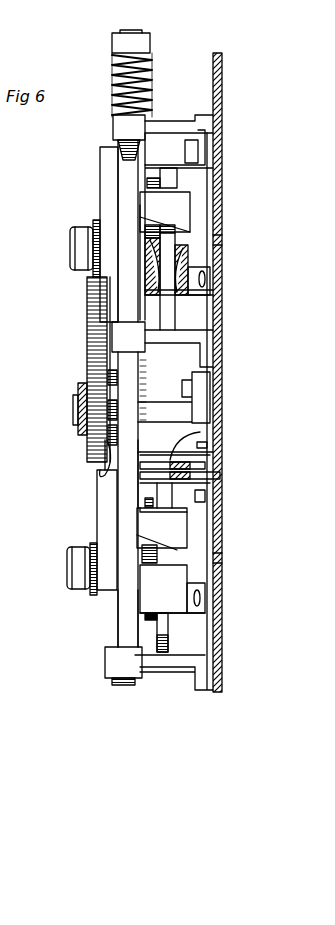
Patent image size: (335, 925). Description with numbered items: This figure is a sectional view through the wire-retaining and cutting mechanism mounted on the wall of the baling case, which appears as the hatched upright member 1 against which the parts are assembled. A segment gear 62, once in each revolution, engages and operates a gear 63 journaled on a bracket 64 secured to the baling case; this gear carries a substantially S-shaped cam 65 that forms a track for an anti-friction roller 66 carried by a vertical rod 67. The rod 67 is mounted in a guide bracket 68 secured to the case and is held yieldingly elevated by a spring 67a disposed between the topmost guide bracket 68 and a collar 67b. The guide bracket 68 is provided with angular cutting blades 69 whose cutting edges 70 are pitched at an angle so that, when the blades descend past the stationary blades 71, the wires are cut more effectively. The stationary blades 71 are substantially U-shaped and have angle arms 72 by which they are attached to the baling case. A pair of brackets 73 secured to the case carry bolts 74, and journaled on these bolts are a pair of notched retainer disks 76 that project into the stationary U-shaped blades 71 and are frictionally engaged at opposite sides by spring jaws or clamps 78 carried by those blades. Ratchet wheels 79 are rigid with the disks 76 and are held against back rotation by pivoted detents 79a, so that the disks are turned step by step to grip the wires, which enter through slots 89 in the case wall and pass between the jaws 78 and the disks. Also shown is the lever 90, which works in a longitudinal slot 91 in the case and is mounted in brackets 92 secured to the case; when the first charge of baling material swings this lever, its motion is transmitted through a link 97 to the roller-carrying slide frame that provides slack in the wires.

The wall 1 is at (222, 98).
The collar 67b is at (150, 43).
The spring 67a is at (154, 80).
The guide bracket 68 is at (125, 118).
The angular cutting blades 69 is at (140, 178).
The vertical rod 67 is at (118, 628).
The brackets 73 is at (110, 158).
The disks 76 is at (170, 183).
The cutting edges 70 is at (165, 222).
The spring jaws or clamps 78 is at (185, 247).
The stationary blades 71 is at (195, 258).
The slots 89 is at (215, 240).
The angle arms 72 is at (205, 282).
The bolts 74 is at (80, 248).
The segment gear 62 is at (87, 303).
The S-shaped cam 65 is at (112, 378).
The bracket 64 is at (78, 390).
The gear 63 is at (87, 448).
The link 97 is at (200, 432).
The lever 90 is at (218, 467).
The longitudinal slot 91 is at (222, 478).
The anti-friction roller 66 is at (110, 460).
The brackets 92 is at (205, 492).
The pivoted detents 79a is at (143, 503).
The ratchet wheels 79 is at (152, 558).